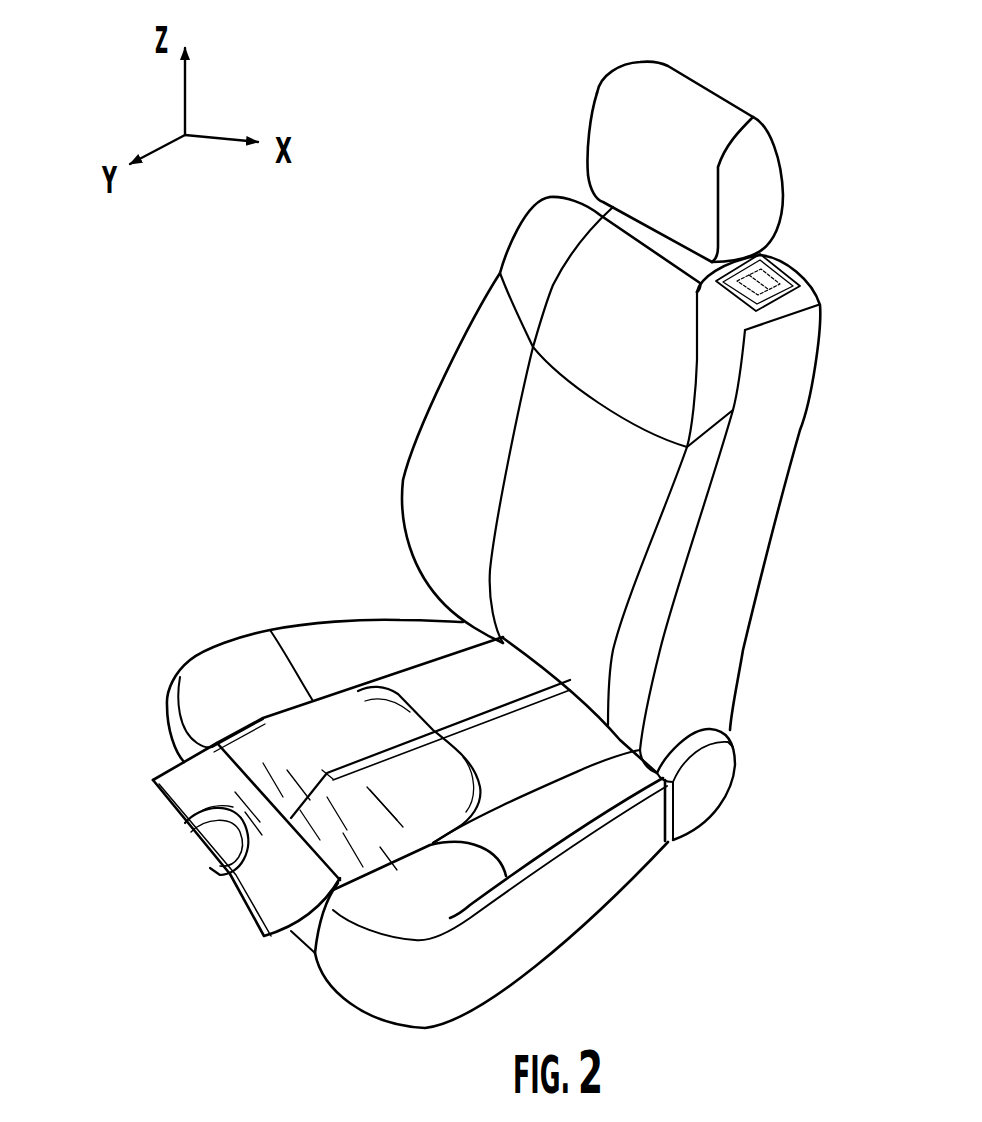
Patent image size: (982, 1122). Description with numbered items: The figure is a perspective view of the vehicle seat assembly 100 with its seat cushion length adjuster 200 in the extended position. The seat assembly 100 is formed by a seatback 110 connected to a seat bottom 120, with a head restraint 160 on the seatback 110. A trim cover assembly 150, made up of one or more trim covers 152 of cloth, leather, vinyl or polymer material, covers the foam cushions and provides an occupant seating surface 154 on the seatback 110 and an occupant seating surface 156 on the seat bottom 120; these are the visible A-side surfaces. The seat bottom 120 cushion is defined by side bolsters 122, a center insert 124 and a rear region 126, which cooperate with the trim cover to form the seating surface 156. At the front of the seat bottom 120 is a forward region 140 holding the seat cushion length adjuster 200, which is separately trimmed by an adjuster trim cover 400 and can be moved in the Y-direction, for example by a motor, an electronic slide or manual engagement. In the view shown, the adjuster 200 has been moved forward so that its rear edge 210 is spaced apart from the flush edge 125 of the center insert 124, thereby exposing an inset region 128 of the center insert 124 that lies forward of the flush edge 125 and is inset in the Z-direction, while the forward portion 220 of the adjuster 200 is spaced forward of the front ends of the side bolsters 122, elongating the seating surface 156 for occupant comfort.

The vehicle seat assembly 100 is at (466, 76).
The seatback 110 is at (613, 482).
The seat bottom 120 is at (407, 782).
The side bolsters 122 is at (404, 657).
The center insert 124 is at (354, 695).
The flush edge 125 is at (317, 748).
The rear region 126 is at (494, 686).
The inset region 128 is at (271, 753).
The forward region 140 is at (265, 856).
The trim cover assembly 150 is at (442, 890).
The trim cover 152 is at (573, 473).
The occupant seating surface of the seatback 154 is at (580, 557).
The occupant seating surface of the seat bottom 156 is at (543, 750).
The head restraint 160 is at (653, 137).
The seat cushion length adjuster 200 is at (193, 864).
The rear edge 210 is at (313, 871).
The forward portion 220 is at (250, 935).
The adjuster trim cover 400 is at (217, 847).